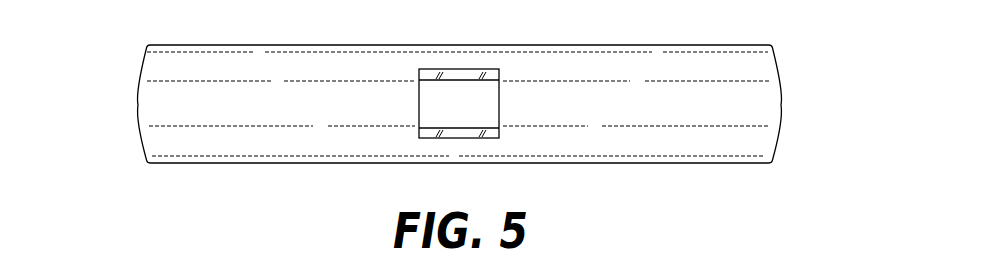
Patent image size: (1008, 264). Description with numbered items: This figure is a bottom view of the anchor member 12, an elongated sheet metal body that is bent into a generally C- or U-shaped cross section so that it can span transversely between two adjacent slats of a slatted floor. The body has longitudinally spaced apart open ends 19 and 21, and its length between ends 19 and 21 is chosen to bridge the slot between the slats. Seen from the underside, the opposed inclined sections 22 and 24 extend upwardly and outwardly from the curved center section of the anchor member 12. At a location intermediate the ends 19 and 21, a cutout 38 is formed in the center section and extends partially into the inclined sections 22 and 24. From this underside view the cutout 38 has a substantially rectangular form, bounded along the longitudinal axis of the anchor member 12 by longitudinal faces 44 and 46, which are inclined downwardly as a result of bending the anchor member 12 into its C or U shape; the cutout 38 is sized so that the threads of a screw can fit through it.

The anchor member 12 is at (777, 180).
The open end 19 is at (138, 105).
The open end 21 is at (783, 107).
The inclined section 22 is at (217, 145).
The inclined section 24 is at (701, 70).
The cutout 38 is at (470, 103).
The longitudinal face 44 is at (430, 72).
The longitudinal face 46 is at (431, 133).